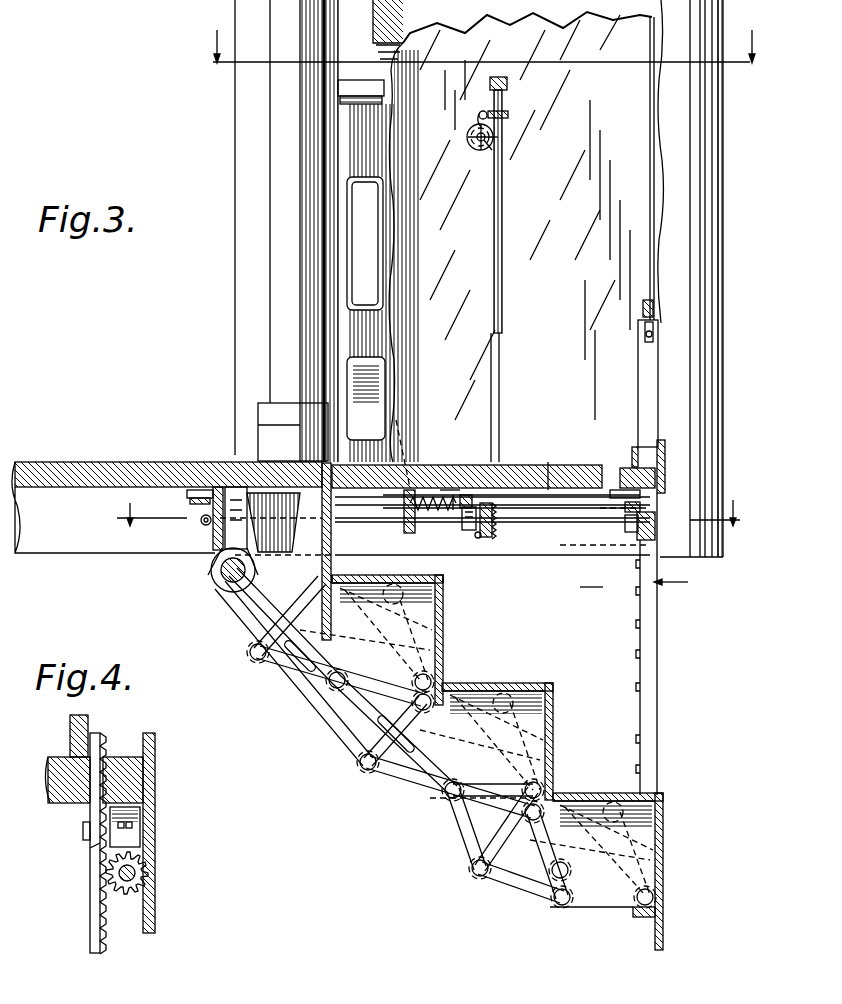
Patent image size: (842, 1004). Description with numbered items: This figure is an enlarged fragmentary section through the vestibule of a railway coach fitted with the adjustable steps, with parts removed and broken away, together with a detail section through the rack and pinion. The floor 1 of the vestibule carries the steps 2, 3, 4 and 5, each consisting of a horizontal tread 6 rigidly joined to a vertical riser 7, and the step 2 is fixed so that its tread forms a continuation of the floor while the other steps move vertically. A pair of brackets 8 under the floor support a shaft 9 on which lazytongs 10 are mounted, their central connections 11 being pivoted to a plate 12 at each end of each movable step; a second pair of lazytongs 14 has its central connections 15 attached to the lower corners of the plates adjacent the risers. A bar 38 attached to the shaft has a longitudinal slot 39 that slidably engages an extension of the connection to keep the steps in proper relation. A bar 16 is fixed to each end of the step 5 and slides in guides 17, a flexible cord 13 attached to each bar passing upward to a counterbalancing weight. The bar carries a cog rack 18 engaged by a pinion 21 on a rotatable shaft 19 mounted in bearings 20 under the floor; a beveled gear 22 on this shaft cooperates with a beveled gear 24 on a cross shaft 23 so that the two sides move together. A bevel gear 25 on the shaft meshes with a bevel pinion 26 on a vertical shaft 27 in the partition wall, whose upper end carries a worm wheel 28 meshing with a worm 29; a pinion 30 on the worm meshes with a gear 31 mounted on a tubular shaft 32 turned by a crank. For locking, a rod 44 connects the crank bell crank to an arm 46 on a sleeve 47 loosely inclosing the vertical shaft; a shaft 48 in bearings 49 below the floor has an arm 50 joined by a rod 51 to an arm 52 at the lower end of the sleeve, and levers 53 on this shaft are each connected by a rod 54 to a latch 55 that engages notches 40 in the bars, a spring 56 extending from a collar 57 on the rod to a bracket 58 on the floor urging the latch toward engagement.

In FIG. 3, the floor 1 is at (112, 463).
In FIG. 4, the floor 1 is at (60, 760).
In FIG. 3, the step 2 is at (328, 500).
In FIG. 3, the step 3 is at (440, 578).
In FIG. 3, the step 4 is at (553, 683).
In FIG. 3, the step 5 is at (663, 793).
In FIG. 3, the tread 6 is at (510, 673).
In FIG. 3, the riser 7 is at (443, 632).
In FIG. 3, the brackets or bearings 8 is at (205, 552).
In FIG. 3, the shaft 9 is at (225, 590).
In FIG. 3, the lazytongs 10 is at (262, 668).
In FIG. 3, the central connections 11 is at (335, 683).
In FIG. 3, the plate or member 12 is at (443, 607).
In FIG. 3, the cord or flexible connection 13 is at (652, 200).
In FIG. 3, the second pair of lazytongs 14 is at (395, 628).
In FIG. 3, the central connections 15 is at (612, 490).
In FIG. 3, the bar 16 is at (650, 375).
In FIG. 4, the bar 16 is at (92, 945).
In FIG. 3, the guides 17 is at (662, 452).
In FIG. 4, the guides 17 is at (97, 733).
In FIG. 4, the cog rack 18 is at (105, 930).
In FIG. 3, the rotatable shaft 19 is at (545, 540).
In FIG. 4, the rotatable shaft 19 is at (140, 860).
In FIG. 3, the bearings 20 is at (470, 530).
In FIG. 4, the bearings 20 is at (83, 830).
In FIG. 3, the pinion 21 is at (660, 520).
In FIG. 4, the pinion 21 is at (150, 880).
In FIG. 3, the beveled gear 22 is at (218, 575).
In FIG. 3, the shaft 23 is at (200, 525).
In FIG. 3, the beveled gear 24 is at (192, 500).
In FIG. 3, the bevel gear 25 is at (478, 540).
In FIG. 3, the bevel pinion 26 is at (497, 510).
In FIG. 3, the vertical shaft 27 is at (503, 262).
In FIG. 3, the worm wheel 28 is at (505, 112).
In FIG. 3, the worm 29 is at (483, 112).
In FIG. 3, the pinion 30 is at (479, 119).
In FIG. 3, the gear 31 is at (466, 139).
In FIG. 3, the shaft 32 is at (478, 150).
In FIG. 3, the bar 38 is at (265, 615).
In FIG. 3, the longitudinal slot 39 is at (305, 660).
In FIG. 3, the notches 40 is at (640, 447).
In FIG. 3, the rod 44 is at (492, 150).
In FIG. 3, the arm 46 is at (500, 141).
In FIG. 3, the sleeve 47 is at (503, 210).
In FIG. 3, the shaft 48 is at (300, 462).
In FIG. 3, the bearings 49 is at (298, 462).
In FIG. 3, the arm 50 is at (396, 420).
In FIG. 3, the rod 51 is at (440, 490).
In FIG. 3, the arm 52 is at (466, 495).
In FIG. 3, the levers 53 is at (282, 525).
In FIG. 3, the rod 54 is at (548, 490).
In FIG. 3, the bolt or latch 55 is at (633, 467).
In FIG. 4, the bolt or latch 55 is at (90, 848).
In FIG. 3, the spring 56 is at (455, 497).
In FIG. 3, the collar 57 is at (440, 512).
In FIG. 3, the bracket 58 is at (410, 488).